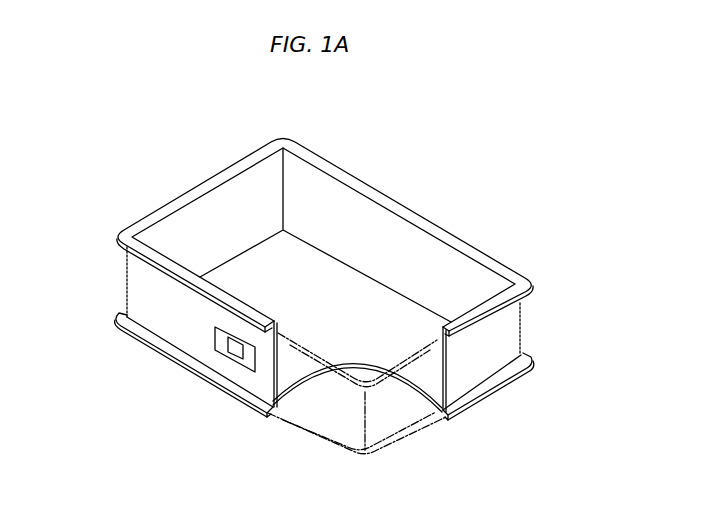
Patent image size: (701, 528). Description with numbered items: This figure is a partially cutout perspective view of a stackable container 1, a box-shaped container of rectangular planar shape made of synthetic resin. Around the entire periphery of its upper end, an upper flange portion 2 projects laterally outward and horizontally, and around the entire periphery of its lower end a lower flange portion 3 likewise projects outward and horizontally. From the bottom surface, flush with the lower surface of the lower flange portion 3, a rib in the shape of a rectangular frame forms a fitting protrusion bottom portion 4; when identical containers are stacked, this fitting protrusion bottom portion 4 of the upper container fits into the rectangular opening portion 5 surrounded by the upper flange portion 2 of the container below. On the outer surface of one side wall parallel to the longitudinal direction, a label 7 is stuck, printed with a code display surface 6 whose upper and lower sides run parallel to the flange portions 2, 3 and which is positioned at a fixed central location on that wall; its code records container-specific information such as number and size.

The stackable container 1 is at (481, 373).
The upper flange portion 2 is at (150, 263).
The lower flange portion 3 is at (192, 371).
The fitting protrusion bottom portion 4 is at (275, 413).
The rectangular opening portion 5 is at (373, 214).
The code display surface 6 is at (237, 352).
The label 7 is at (215, 340).